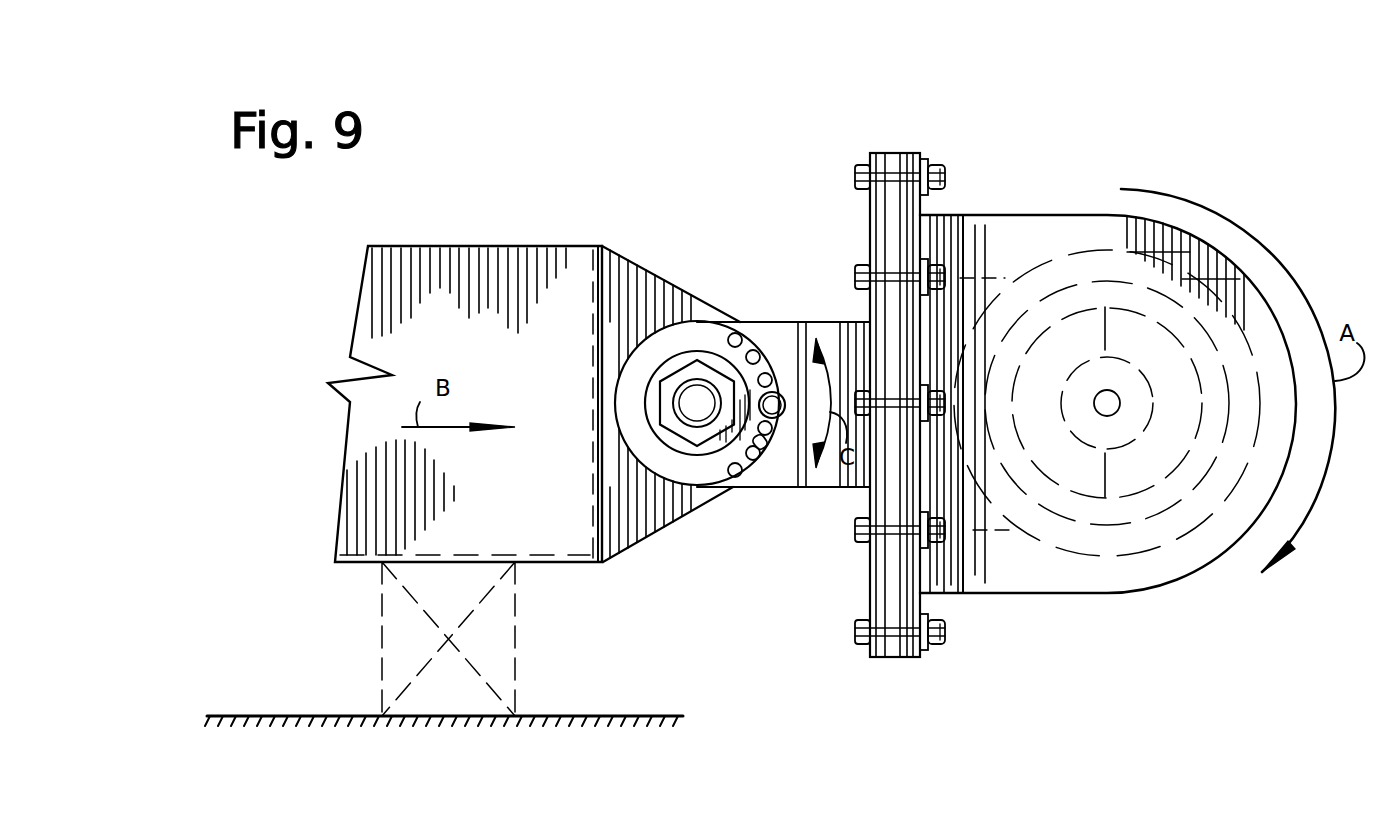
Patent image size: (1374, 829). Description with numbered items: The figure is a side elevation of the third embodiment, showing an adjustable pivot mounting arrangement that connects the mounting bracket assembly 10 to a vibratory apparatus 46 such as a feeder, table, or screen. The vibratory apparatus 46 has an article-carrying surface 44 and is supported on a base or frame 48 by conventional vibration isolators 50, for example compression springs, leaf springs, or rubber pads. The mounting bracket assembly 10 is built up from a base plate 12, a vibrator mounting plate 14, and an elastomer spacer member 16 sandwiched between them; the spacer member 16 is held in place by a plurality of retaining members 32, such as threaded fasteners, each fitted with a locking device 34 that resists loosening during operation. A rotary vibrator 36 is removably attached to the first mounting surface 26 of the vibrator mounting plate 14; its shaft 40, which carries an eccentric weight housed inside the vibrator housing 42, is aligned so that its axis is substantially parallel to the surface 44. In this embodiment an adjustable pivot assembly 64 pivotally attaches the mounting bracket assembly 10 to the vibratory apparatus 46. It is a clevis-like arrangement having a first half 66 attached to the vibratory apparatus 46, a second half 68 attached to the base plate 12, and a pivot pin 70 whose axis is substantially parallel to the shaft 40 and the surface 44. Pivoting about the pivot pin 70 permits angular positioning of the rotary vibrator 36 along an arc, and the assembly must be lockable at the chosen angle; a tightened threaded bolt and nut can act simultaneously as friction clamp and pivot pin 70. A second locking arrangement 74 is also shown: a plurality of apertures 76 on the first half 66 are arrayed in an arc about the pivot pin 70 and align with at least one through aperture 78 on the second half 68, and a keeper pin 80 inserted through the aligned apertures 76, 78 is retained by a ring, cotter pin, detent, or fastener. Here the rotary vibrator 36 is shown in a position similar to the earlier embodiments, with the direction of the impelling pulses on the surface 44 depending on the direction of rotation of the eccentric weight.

The mounting bracket assembly 10 is at (925, 122).
The base plate 12 is at (868, 153).
The vibrator mounting plate 14 is at (922, 152).
The spacer member 16 is at (892, 153).
The first mounting surface 26 is at (918, 572).
The retaining members 32 is at (843, 163).
The locking device 34 is at (958, 168).
The rotary vibrator 36 is at (1238, 597).
The shaft 40 is at (1097, 420).
The vibrator housing 42 is at (1150, 219).
The surface 44 is at (418, 553).
The vibratory apparatus 46 is at (360, 295).
The base or frame 48 is at (302, 716).
The vibration isolators 50 is at (382, 652).
The adjustable pivot assembly 64 is at (690, 195).
The first half 66 is at (625, 245).
The second half 68 is at (833, 322).
The pivot pin 70 is at (688, 383).
The second locking arrangement 74 is at (780, 553).
The apertures 76 is at (756, 350).
The through aperture 78 is at (764, 447).
The keeper pin 80 is at (785, 398).